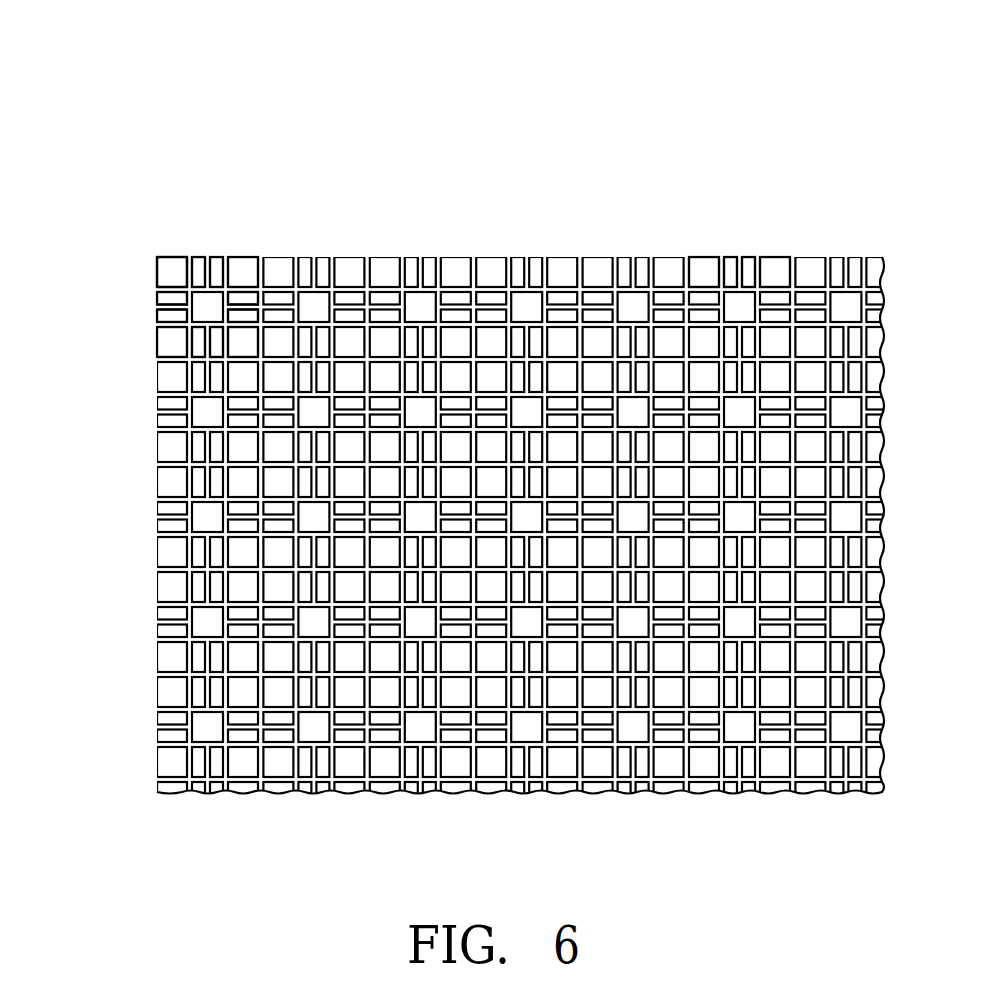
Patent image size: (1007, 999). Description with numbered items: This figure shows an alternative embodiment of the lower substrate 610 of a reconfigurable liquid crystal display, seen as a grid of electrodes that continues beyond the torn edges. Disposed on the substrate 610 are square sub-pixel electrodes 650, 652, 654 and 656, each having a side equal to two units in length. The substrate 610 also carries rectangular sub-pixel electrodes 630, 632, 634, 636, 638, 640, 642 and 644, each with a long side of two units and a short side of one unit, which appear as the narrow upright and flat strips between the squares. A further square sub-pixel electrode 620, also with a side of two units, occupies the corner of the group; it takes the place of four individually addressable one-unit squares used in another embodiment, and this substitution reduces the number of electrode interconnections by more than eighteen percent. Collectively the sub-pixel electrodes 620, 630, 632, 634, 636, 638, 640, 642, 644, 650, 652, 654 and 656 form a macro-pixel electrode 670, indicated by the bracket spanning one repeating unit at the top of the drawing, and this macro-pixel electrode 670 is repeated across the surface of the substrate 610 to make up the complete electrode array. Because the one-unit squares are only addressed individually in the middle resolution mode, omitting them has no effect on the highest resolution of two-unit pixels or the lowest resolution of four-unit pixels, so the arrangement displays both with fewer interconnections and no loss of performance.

The lower substrate 610 is at (851, 206).
The sub-pixel electrode 620 is at (160, 272).
The sub-pixel electrode 630 is at (198, 262).
The sub-pixel electrode 632 is at (215, 262).
The sub-pixel electrode 634 is at (247, 298).
The sub-pixel electrode 636 is at (253, 313).
The sub-pixel electrode 638 is at (220, 348).
The sub-pixel electrode 640 is at (200, 347).
The sub-pixel electrode 642 is at (168, 318).
The sub-pixel electrode 644 is at (167, 300).
The sub-pixel electrode 650 is at (168, 267).
The sub-pixel electrode 652 is at (242, 265).
The sub-pixel electrode 654 is at (247, 340).
The sub-pixel electrode 656 is at (170, 337).
The macro-pixel electrode 670 is at (795, 238).